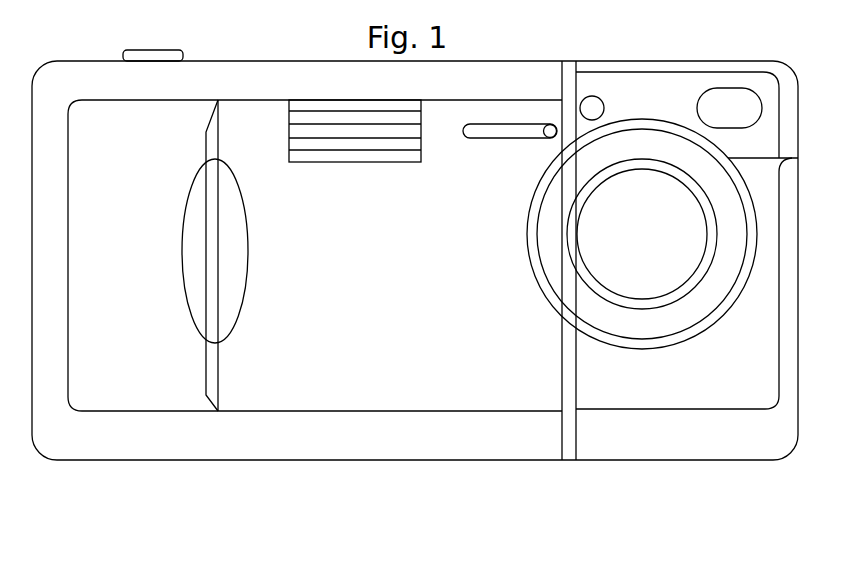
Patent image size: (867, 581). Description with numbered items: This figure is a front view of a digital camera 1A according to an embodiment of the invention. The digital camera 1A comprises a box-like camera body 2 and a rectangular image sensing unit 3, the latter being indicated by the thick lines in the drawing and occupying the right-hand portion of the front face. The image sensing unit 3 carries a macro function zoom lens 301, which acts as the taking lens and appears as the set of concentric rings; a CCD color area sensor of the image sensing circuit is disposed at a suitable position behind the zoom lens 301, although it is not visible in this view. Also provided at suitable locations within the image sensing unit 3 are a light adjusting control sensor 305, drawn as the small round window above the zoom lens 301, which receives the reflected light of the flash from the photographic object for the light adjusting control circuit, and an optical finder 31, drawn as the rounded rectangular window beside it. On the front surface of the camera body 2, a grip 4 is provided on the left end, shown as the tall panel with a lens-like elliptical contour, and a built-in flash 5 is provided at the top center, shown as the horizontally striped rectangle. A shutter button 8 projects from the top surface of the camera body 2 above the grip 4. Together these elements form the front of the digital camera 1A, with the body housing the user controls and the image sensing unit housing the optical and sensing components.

The digital camera 1A is at (277, 32).
The camera body 2 is at (501, 478).
The image sensing unit 3 is at (655, 480).
The grip 4 is at (141, 404).
The built-in flash 5 is at (348, 163).
The shutter button 8 is at (150, 50).
The optical finder 31 is at (697, 108).
The zoom lens 301 is at (692, 338).
The light adjusting control sensor 305 is at (596, 104).